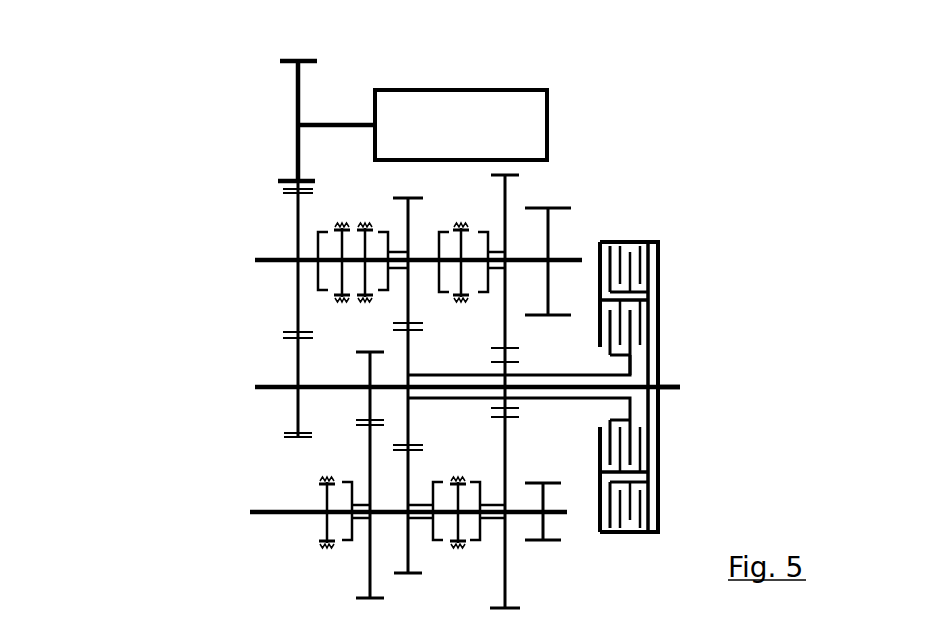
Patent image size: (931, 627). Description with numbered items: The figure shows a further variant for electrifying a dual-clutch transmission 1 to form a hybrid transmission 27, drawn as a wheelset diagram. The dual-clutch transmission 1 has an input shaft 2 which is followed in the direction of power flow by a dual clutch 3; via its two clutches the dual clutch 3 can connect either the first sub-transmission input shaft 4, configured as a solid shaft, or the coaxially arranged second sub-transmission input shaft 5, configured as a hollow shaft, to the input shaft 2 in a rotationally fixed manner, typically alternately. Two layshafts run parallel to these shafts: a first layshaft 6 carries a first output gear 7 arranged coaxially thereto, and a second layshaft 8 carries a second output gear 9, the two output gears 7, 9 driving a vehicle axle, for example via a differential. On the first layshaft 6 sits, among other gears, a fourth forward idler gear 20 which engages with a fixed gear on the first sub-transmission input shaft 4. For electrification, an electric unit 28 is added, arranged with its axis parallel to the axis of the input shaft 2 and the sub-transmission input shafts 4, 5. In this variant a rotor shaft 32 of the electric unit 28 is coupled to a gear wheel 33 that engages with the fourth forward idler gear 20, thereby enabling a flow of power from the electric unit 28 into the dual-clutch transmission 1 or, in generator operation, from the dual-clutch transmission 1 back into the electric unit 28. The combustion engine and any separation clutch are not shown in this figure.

The dual-clutch transmission 1 is at (426, 369).
The input shaft 2 is at (676, 389).
The dual clutch 3 is at (660, 276).
The first sub-transmission input shaft 4 is at (262, 386).
The second sub-transmission input shaft 5 is at (540, 375).
The first layshaft 6 is at (257, 262).
The first output gear 7 is at (553, 226).
The second layshaft 8 is at (275, 513).
The second output gear 9 is at (547, 538).
The fourth forward idler gear 20 is at (295, 220).
The hybrid transmission 27 is at (306, 91).
The electric unit 28 is at (460, 115).
The rotor shaft 32 is at (342, 120).
The gear wheel 33 is at (295, 92).